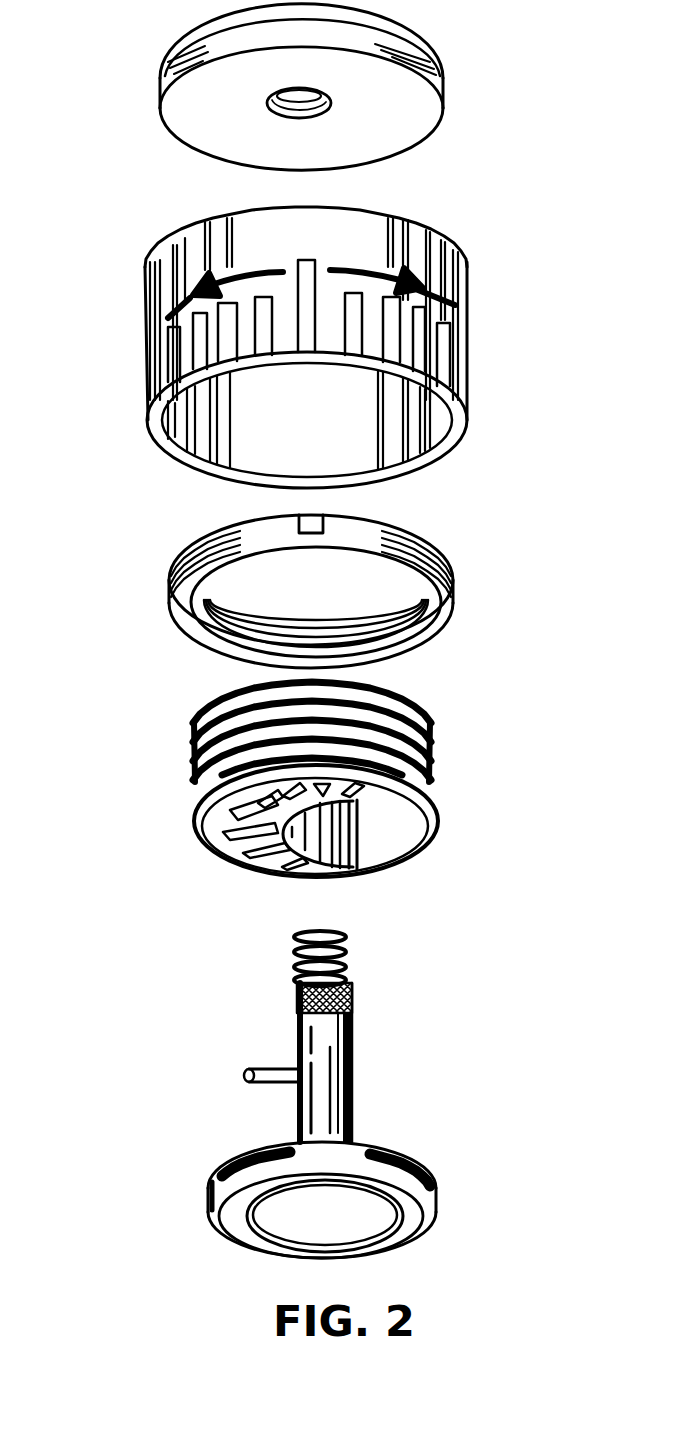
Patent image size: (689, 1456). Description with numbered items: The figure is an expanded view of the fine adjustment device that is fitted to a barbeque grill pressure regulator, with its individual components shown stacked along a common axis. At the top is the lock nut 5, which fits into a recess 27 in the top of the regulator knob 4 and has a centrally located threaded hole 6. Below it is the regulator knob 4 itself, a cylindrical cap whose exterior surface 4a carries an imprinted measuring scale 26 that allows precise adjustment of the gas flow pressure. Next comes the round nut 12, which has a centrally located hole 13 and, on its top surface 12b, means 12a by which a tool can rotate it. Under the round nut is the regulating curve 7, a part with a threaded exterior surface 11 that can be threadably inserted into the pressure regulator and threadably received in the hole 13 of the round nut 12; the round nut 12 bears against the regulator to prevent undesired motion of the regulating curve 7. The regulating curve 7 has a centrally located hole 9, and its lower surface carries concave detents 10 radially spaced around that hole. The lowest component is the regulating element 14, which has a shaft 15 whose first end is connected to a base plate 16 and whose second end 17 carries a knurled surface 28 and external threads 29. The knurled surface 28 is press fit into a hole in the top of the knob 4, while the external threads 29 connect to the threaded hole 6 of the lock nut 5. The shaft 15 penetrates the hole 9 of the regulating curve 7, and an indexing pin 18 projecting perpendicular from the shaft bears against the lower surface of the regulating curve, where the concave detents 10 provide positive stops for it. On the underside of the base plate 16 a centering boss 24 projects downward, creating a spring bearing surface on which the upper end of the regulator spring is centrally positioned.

The regulator knob 4 is at (460, 263).
The exterior surface 4a is at (467, 368).
The lock nut 5 is at (430, 55).
The threaded hole 6 is at (320, 110).
The regulating curve 7 is at (360, 803).
The centrally located hole 9 is at (330, 835).
The concave detents 10 is at (242, 828).
The threaded exterior surface 11 is at (433, 755).
The round nut 12 is at (453, 576).
The means for a tool to rotate the round nut 12a is at (312, 521).
The top surface 12b is at (212, 535).
The centrally located hole 13 is at (253, 588).
The regulating element 14 is at (353, 1083).
The shaft 15 is at (350, 1048).
The base plate 16 is at (434, 1182).
The second end 17 is at (313, 927).
The indexing pin 18 is at (277, 1065).
The centering boss 24 is at (293, 1236).
The measuring scale 26 is at (167, 355).
The recess 27 is at (403, 1229).
The knurled surface 28 is at (350, 1000).
The external threads 29 is at (347, 968).